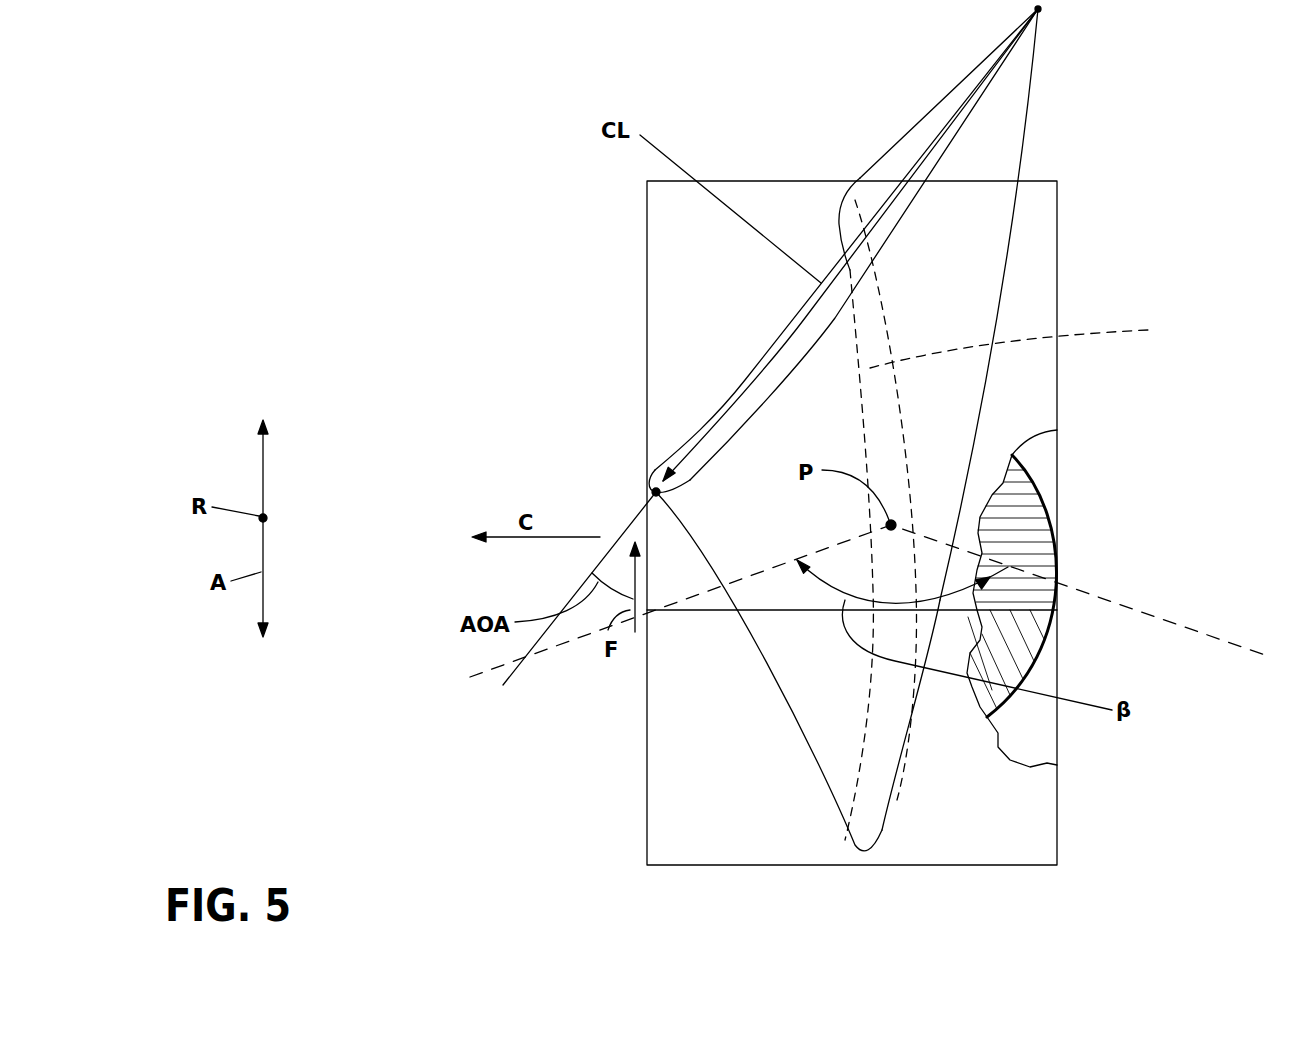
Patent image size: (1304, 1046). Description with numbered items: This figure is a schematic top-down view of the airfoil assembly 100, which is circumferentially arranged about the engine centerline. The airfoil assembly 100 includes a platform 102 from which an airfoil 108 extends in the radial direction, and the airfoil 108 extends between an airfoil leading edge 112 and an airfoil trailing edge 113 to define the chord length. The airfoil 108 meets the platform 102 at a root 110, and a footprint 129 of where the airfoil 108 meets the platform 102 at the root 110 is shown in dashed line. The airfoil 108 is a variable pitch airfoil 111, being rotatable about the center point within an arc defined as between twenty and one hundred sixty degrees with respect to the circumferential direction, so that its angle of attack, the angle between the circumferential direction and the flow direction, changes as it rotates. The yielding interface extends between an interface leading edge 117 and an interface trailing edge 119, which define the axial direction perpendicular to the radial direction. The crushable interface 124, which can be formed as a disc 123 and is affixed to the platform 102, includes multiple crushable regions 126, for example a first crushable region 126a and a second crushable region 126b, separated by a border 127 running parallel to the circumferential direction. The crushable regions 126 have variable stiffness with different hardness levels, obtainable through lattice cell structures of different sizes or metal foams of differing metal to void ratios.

The airfoil assembly 100 is at (552, 90).
The platform 102 is at (705, 285).
The airfoil 108 is at (940, 337).
The root 110 is at (842, 230).
The variable pitch airfoil 111 is at (1040, 96).
The airfoil leading edge 112 is at (737, 408).
The airfoil trailing edge 113 is at (959, 84).
The interface leading edge 117 is at (877, 865).
The interface trailing edge 119 is at (750, 180).
The disc 123 is at (1025, 472).
The crushable interface 124 is at (1032, 548).
The crushable regions 126 is at (702, 800).
The first crushable region 126a is at (1018, 624).
The second crushable region 126b is at (1013, 532).
The border 127 is at (990, 622).
The footprint 129 is at (1032, 344).